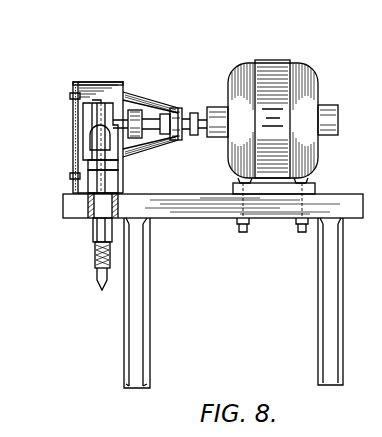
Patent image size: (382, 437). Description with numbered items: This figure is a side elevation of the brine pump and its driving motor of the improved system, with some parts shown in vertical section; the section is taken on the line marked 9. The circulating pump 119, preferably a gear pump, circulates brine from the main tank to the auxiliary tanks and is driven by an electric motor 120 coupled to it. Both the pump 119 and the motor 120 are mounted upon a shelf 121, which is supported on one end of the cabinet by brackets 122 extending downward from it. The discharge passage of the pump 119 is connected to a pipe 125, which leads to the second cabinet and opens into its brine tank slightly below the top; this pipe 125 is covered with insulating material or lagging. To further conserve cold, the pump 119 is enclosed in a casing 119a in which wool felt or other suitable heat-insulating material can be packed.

The circulating pump 119 is at (100, 122).
The casing 119a is at (88, 82).
The section line 9- 9 is at (143, 166).
The electric motor 120 is at (273, 62).
The shelf 121 is at (205, 211).
The brackets 122 is at (128, 339).
The pipe 125 is at (94, 238).